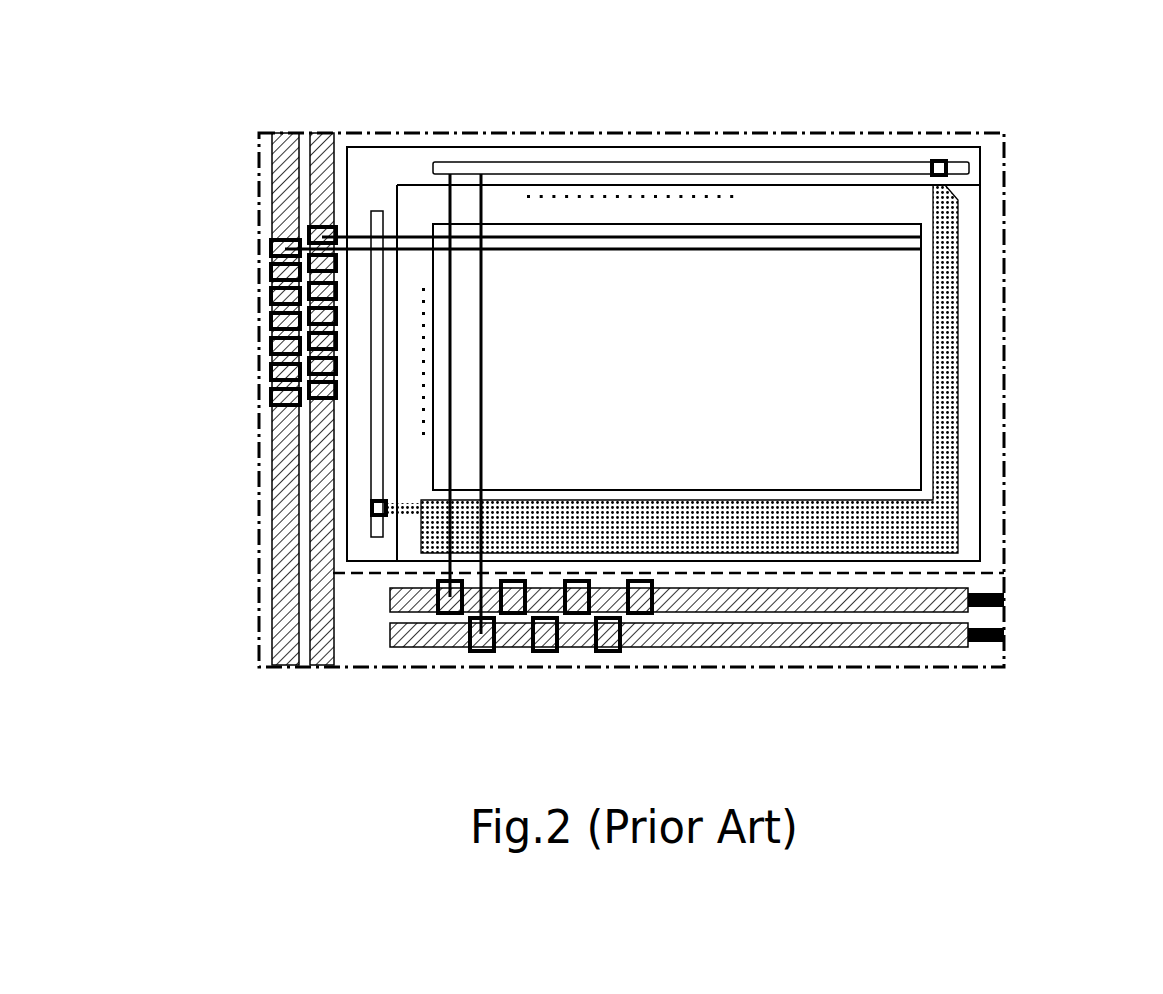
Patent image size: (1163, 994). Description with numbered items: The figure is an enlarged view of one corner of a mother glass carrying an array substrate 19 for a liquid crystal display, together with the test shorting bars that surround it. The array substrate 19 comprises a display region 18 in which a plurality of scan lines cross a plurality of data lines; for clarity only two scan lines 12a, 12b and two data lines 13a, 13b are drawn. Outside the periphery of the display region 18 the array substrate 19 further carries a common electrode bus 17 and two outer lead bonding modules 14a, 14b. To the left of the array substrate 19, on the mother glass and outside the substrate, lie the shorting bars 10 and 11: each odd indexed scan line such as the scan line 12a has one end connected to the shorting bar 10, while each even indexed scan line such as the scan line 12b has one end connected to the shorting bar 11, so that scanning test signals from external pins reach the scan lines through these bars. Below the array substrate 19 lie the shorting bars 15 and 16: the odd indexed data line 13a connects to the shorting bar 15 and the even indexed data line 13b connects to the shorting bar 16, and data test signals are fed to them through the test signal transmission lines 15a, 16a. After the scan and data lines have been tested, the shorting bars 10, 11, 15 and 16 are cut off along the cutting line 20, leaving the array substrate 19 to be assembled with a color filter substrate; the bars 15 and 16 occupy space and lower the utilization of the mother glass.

The shorting bar 10 is at (328, 133).
The shorting bar 11 is at (287, 133).
The scan line 12a is at (675, 236).
The scan line 12b is at (745, 251).
The data line 13a is at (452, 346).
The data line 13b is at (483, 415).
The outer lead bonding module 14a is at (768, 170).
The outer lead bonding module 14b is at (378, 466).
The shorting bar 15 is at (828, 598).
The test signal transmission line 15a is at (1002, 597).
The shorting bar 16 is at (898, 634).
The test signal transmission line 16a is at (1002, 633).
The common electrode bus 17 is at (925, 540).
The display region 18 is at (868, 368).
The array substrate 19 is at (985, 142).
The cutting line 20 is at (380, 574).